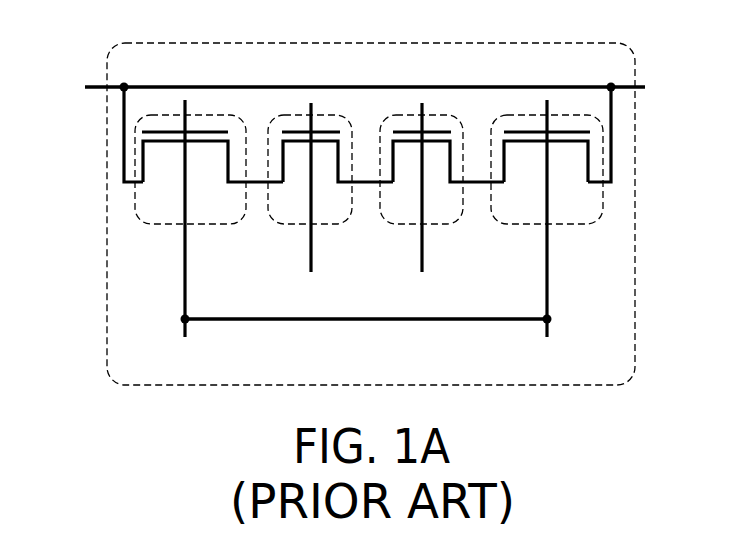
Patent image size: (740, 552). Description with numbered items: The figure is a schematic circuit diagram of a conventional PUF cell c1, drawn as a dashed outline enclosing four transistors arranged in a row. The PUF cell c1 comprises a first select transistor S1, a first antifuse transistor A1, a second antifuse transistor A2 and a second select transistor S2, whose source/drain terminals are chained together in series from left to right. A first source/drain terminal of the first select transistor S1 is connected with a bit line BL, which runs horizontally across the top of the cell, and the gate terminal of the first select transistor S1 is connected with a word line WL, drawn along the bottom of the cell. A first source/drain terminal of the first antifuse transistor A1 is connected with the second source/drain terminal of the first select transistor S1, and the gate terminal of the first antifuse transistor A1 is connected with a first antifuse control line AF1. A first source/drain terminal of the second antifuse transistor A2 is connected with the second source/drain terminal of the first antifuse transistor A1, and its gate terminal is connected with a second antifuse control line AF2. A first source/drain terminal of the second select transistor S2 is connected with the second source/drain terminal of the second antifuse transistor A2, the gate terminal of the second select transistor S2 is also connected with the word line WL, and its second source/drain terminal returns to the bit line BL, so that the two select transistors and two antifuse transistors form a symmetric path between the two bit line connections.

The bit line BL is at (346, 126).
The word line WL is at (358, 237).
The first select transistor S1 is at (155, 222).
The second select transistor S2 is at (561, 222).
The first antifuse transistor A1 is at (287, 222).
The second antifuse transistor A2 is at (450, 222).
The first antifuse control line AF1 is at (310, 205).
The second antifuse control line AF2 is at (419, 205).
The PUF cell c1 is at (613, 370).